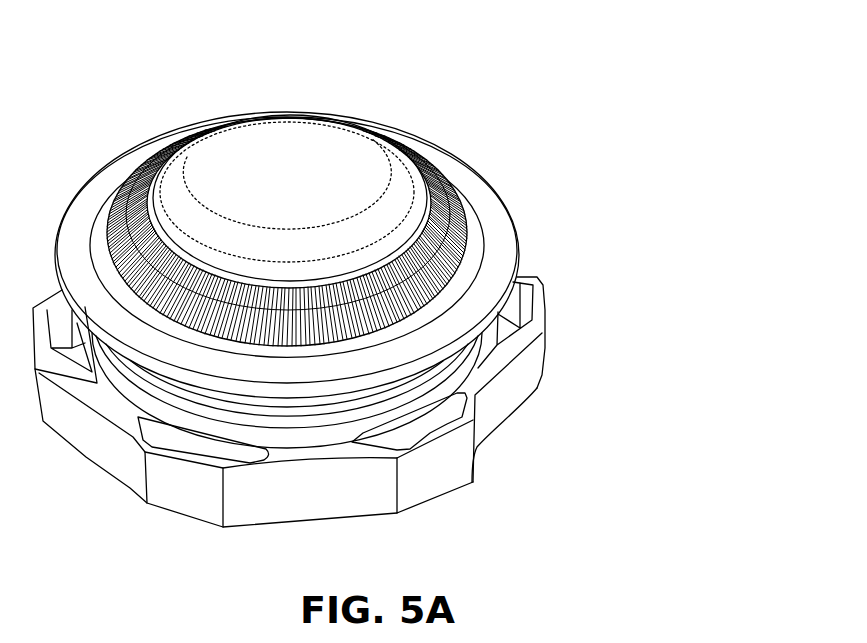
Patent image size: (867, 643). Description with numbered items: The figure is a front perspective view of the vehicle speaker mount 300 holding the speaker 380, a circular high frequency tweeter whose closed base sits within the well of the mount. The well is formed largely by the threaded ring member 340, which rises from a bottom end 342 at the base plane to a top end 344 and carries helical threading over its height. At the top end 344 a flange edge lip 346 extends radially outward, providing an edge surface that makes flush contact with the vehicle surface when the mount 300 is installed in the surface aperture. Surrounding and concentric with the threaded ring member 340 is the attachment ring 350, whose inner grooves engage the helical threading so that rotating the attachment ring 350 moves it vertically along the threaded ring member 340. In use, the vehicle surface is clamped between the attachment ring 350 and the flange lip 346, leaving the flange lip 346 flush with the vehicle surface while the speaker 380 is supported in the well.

The vehicle speaker mount 300 is at (433, 83).
The threaded ring member 340 is at (437, 379).
The bottom end 342 is at (303, 526).
The top end 344 is at (489, 224).
The flange edge lip 346 is at (468, 176).
The attachment ring 350 is at (440, 497).
The speaker 380 is at (283, 152).